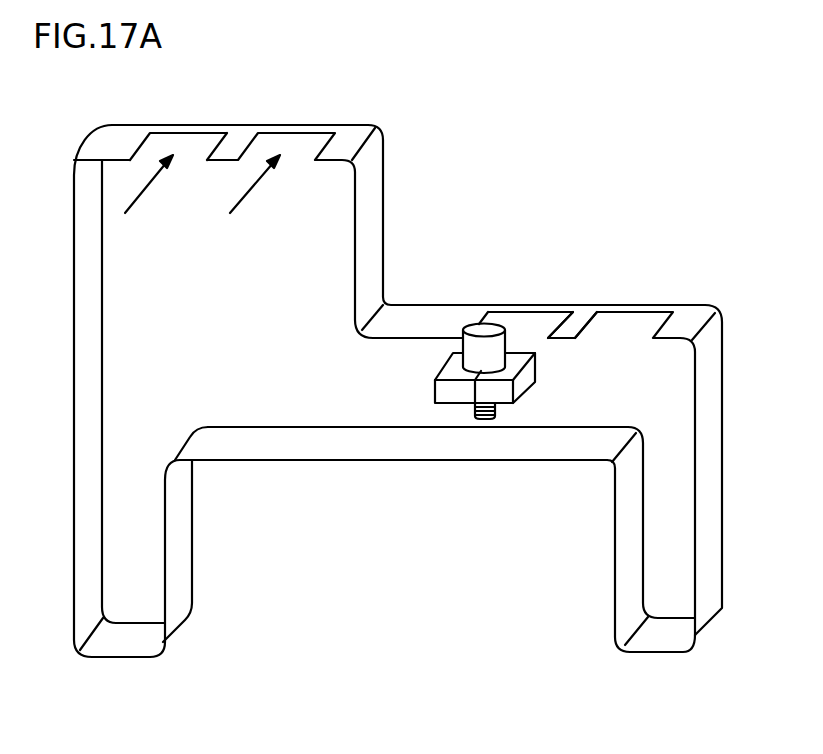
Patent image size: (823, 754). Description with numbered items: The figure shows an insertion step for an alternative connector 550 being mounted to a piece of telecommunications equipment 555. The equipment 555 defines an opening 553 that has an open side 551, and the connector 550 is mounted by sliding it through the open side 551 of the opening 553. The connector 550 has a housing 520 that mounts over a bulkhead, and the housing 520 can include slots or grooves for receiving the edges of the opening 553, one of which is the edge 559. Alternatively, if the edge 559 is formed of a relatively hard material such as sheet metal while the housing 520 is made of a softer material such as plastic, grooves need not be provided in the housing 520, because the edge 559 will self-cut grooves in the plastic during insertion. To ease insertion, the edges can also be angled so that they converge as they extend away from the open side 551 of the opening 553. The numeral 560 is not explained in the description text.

The telecommunications equipment 555 is at (383, 190).
The opening 553 is at (544, 447).
The notch 560 is at (559, 322).
The open side 551 is at (527, 335).
The edge 559 is at (485, 320).
The housing 520 is at (450, 405).
The connector 550 is at (428, 410).